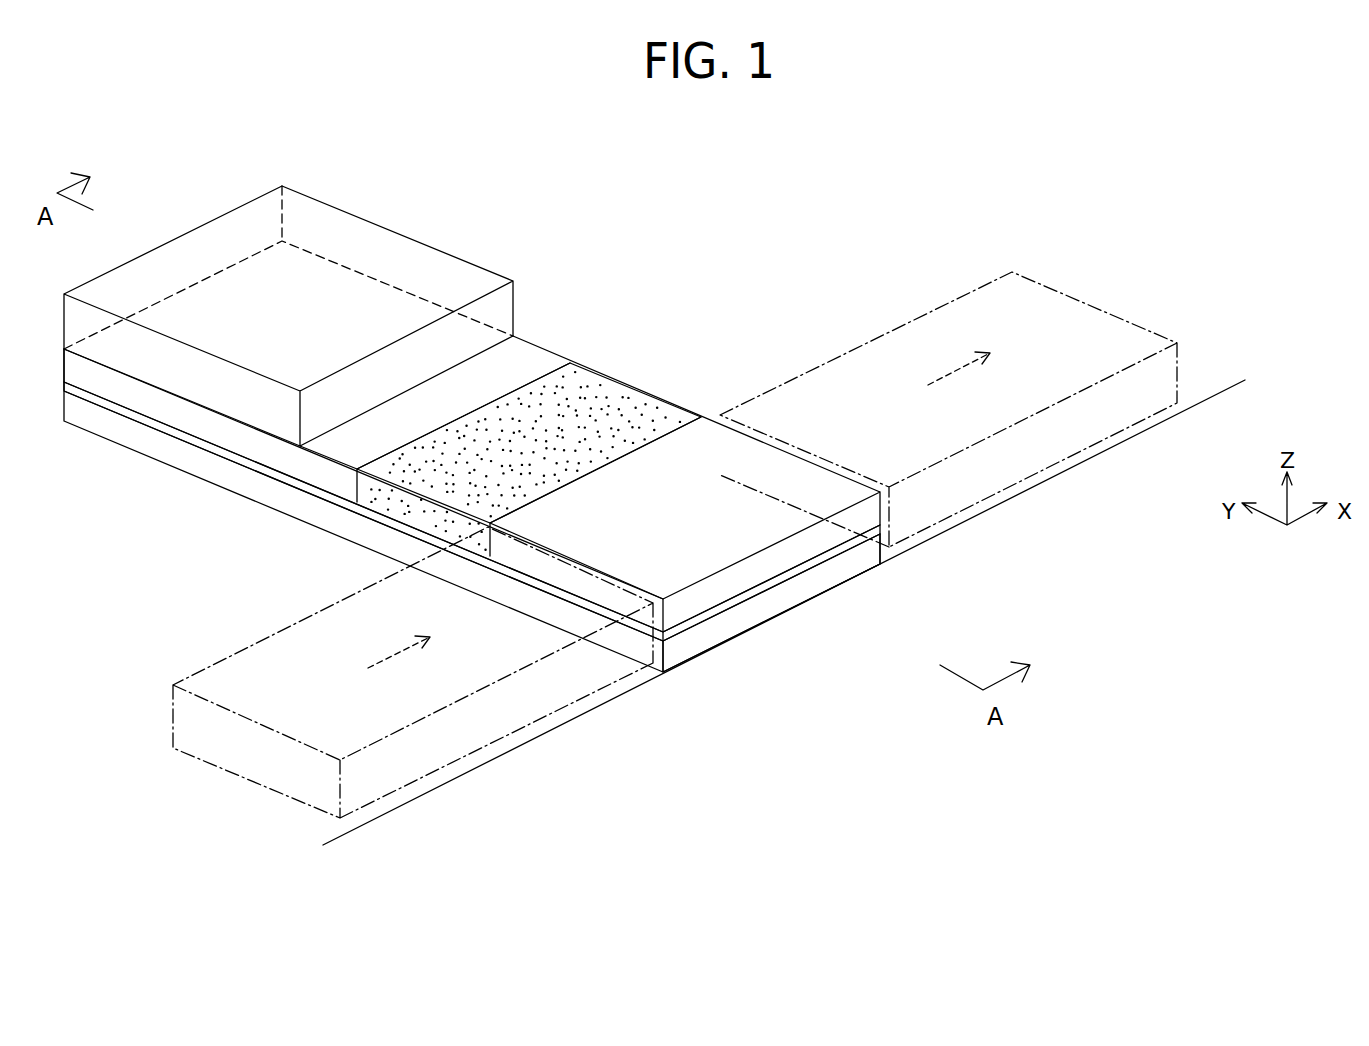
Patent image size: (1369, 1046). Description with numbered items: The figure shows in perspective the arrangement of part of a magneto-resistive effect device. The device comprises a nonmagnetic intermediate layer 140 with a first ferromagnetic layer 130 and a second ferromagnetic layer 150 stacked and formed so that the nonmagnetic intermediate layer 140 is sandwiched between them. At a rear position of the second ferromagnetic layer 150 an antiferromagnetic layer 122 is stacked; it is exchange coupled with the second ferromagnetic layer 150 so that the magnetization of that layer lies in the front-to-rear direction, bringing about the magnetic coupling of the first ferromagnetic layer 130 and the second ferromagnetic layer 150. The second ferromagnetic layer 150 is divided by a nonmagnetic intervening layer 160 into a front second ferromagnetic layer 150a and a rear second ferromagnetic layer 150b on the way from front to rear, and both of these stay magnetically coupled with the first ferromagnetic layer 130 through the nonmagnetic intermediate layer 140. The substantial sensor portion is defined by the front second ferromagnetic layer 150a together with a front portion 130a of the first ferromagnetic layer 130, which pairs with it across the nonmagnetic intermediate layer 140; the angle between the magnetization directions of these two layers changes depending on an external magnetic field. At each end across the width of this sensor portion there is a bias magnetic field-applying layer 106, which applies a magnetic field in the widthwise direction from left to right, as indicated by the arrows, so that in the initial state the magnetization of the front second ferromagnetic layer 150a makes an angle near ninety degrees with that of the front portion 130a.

The bias magnetic field-applying layer 106 is at (1092, 330).
The antiferromagnetic layer 122 is at (405, 253).
The first ferromagnetic layer 130 is at (245, 479).
The front portion of the first ferromagnetic layer 130a is at (722, 629).
The nonmagnetic intermediate layer 140 is at (312, 488).
The second ferromagnetic layer 150 is at (788, 198).
The front second ferromagnetic layer 150a is at (707, 468).
The rear second ferromagnetic layer 150b is at (522, 363).
The nonmagnetic intervening layer 160 is at (610, 398).